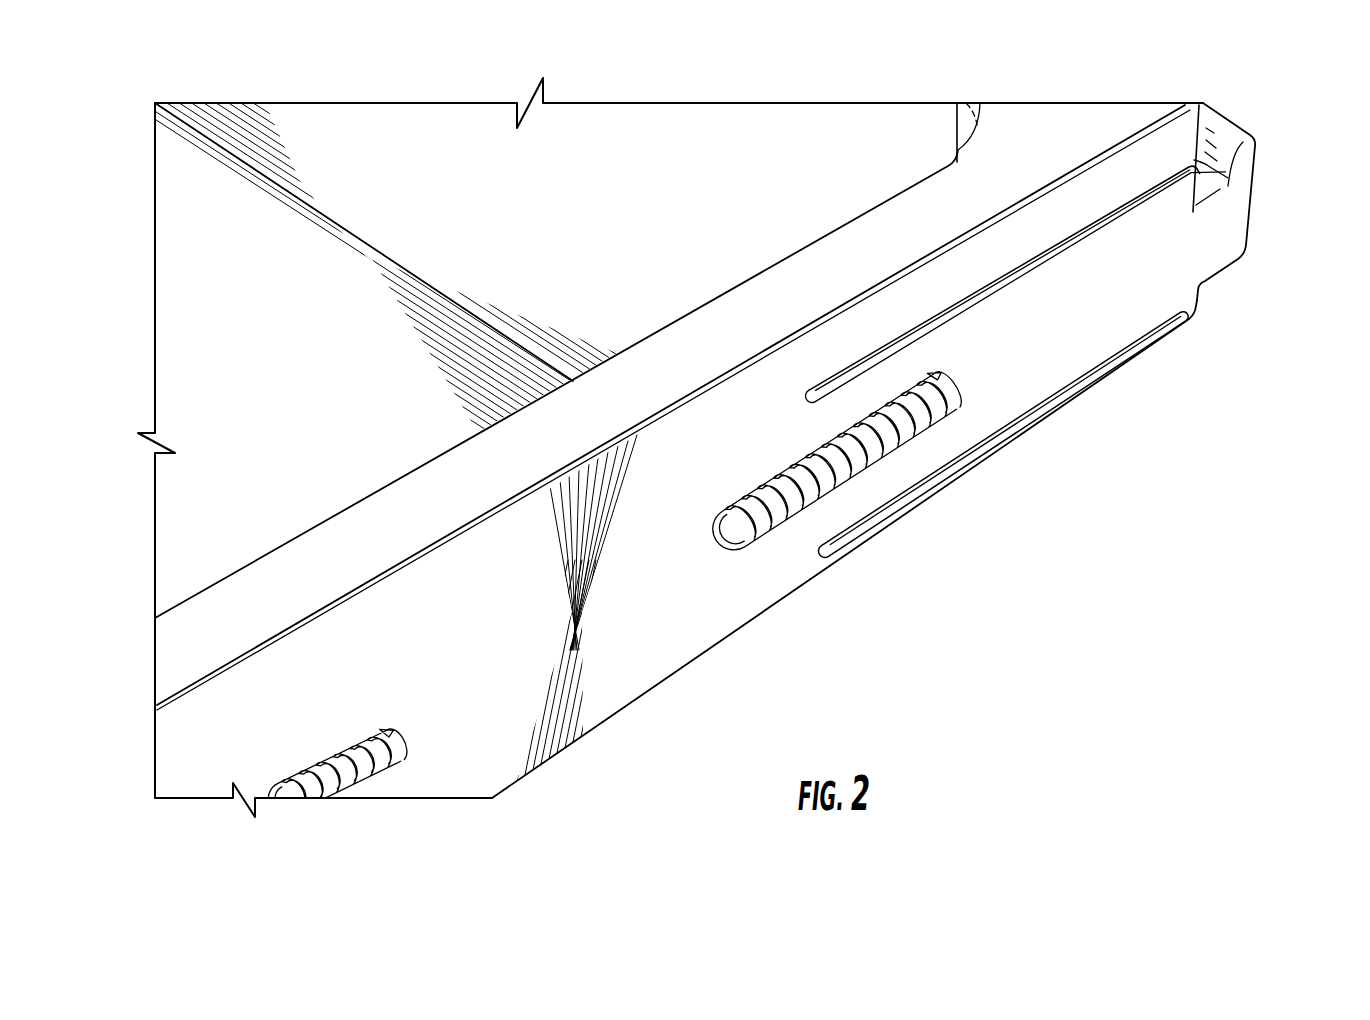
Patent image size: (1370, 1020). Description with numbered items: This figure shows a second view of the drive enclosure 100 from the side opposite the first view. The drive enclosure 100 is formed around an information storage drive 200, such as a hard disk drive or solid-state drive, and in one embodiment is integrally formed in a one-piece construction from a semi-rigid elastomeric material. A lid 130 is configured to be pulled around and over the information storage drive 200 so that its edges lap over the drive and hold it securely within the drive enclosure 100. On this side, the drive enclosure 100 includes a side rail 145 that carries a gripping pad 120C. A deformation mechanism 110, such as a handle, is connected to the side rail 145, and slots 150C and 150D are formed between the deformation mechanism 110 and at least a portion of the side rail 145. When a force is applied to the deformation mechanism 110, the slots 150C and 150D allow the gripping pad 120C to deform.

The drive enclosure 100 is at (741, 462).
The deformation mechanism 110 is at (1238, 198).
The gripping pad 120C is at (790, 530).
The lid 130 is at (297, 590).
The side rail 145 is at (601, 656).
The slot 150C is at (923, 320).
The slot 150D is at (1093, 375).
The information storage drive 200 is at (203, 412).